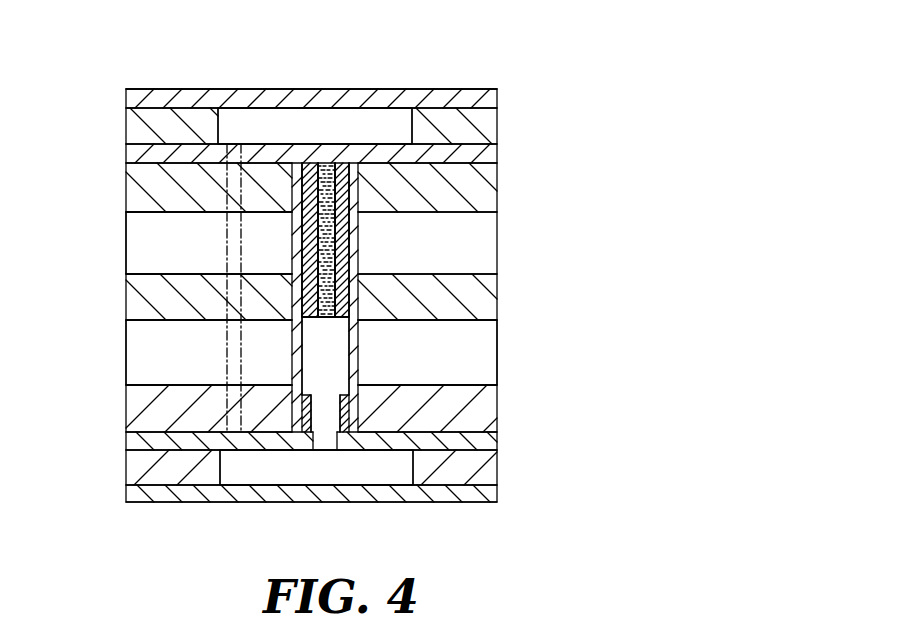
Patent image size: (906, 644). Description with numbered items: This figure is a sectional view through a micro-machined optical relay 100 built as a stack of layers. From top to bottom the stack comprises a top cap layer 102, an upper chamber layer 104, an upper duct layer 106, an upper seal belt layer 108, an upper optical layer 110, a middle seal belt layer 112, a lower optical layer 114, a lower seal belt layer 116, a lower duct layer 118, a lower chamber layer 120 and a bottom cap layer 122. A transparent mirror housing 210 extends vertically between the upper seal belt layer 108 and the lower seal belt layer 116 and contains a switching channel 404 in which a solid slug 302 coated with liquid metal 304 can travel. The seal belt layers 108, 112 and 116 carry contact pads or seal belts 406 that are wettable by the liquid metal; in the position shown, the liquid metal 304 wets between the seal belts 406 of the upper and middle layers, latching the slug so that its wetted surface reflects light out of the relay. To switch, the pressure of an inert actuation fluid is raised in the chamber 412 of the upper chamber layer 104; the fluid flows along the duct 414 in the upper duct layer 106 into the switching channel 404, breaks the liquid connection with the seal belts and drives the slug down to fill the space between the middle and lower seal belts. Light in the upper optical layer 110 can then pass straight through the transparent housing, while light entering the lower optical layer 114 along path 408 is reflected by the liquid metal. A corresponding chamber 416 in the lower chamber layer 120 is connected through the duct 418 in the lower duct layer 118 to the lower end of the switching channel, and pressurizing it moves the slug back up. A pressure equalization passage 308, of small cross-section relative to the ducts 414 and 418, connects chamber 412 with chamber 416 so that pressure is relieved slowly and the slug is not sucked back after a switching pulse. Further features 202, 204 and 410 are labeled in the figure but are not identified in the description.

The optical relay 100 is at (128, 50).
The top cap layer 102 is at (497, 88).
The upper chamber layer 104 is at (497, 112).
The upper duct layer 106 is at (497, 153).
The upper seal belt layer 108 is at (497, 188).
The dielectric layer 204 is at (497, 225).
The upper optical layer 110 is at (497, 262).
The middle seal belt layer 112 is at (497, 300).
The lower optical layer 114 is at (497, 337).
The lower seal belt layer 116 is at (497, 402).
The lower duct layer 118 is at (497, 440).
The lower chamber layer 120 is at (497, 456).
The bottom cap layer 122 is at (497, 495).
The dielectric region 202 is at (142, 247).
The transparent mirror housing 210 is at (300, 340).
The solid slug 302 is at (318, 252).
The liquid metal 304 is at (300, 227).
The pressure equalization passage 308 is at (233, 413).
The switching channel 404 is at (322, 370).
The seal belts 406 is at (310, 165).
The optical path 408 is at (143, 353).
The dielectric region 410 is at (483, 358).
The upper chamber 412 is at (234, 123).
The upper duct 414 is at (320, 165).
The lower chamber 416 is at (229, 472).
The lower duct 418 is at (330, 438).